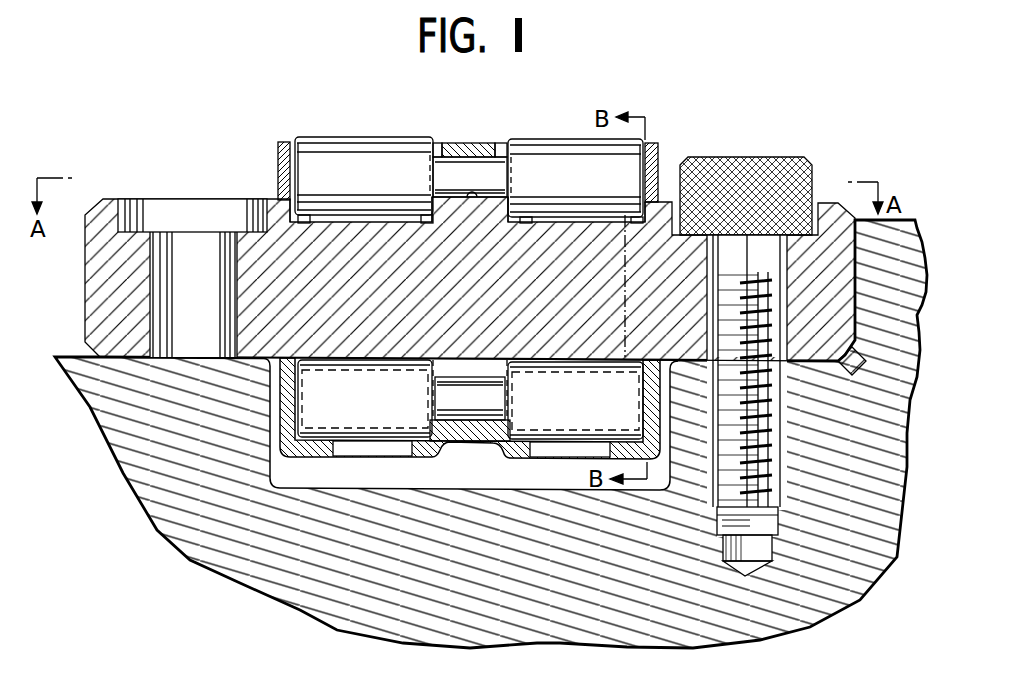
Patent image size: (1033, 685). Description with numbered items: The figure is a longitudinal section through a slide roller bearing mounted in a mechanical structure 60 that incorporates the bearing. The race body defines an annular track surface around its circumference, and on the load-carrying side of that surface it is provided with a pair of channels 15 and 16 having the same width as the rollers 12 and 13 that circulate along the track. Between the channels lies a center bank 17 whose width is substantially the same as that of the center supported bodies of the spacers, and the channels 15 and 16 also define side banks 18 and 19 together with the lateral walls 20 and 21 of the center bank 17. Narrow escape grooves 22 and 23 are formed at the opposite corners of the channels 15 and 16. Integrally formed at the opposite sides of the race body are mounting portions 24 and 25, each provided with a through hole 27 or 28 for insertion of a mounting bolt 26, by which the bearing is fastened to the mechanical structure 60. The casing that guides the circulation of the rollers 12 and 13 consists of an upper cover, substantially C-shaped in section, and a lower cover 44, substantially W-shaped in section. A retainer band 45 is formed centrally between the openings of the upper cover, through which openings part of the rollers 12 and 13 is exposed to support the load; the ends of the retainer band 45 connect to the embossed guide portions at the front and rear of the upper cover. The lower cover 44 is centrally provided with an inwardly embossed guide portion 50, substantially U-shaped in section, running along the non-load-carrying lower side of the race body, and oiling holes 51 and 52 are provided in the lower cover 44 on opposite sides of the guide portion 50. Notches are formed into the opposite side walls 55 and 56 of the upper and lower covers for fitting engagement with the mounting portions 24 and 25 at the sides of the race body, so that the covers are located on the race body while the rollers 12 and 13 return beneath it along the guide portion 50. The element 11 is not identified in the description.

The central coupling member 11 is at (450, 168).
The roller 12 is at (402, 137).
The roller 13 is at (548, 139).
The channel 15 is at (360, 215).
The channel 16 is at (560, 217).
The center bank 17 is at (478, 197).
The side bank 18 is at (290, 205).
The side bank 19 is at (642, 222).
The lateral wall 20 is at (434, 222).
The lateral wall 21 is at (506, 223).
The escape groove 22 is at (305, 227).
The escape groove 23 is at (424, 224).
The mounting portion 24 is at (103, 265).
The mounting portion 25 is at (833, 203).
The mounting bolt 26 is at (758, 170).
The through hole 27 is at (153, 323).
The through hole 28 is at (787, 289).
The lower cover 44 is at (309, 466).
The retainer band 45 is at (487, 150).
The guide portion 50 is at (465, 437).
The oiling hole 51 is at (390, 447).
The oiling hole 52 is at (578, 450).
The side wall 55 is at (278, 150).
The side wall 56 is at (660, 148).
The mechanical structure 60 is at (890, 390).